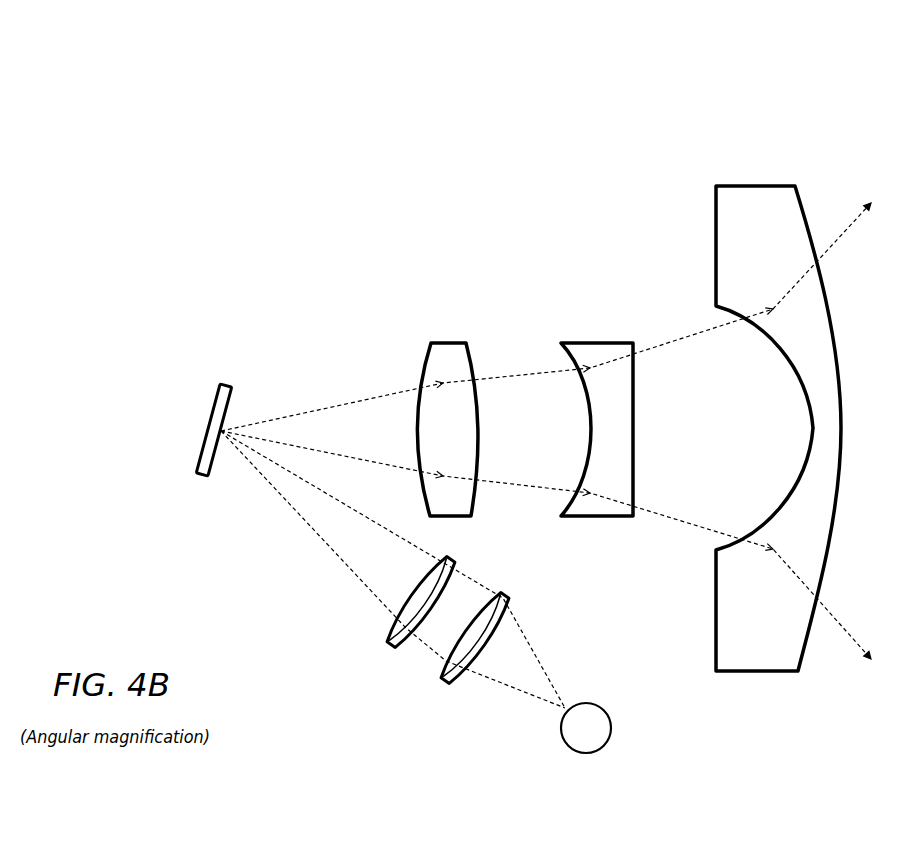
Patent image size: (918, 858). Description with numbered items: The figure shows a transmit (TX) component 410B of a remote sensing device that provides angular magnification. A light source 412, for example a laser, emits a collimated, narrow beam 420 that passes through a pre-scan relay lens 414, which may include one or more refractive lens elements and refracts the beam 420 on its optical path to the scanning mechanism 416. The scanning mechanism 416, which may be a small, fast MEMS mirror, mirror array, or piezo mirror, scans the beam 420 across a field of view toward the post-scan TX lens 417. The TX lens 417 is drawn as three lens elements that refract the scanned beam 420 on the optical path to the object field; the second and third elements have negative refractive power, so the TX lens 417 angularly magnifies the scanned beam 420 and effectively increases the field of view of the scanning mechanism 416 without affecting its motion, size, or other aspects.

The transmit (TX) component 410B is at (97, 139).
The light source 412 is at (618, 725).
The relay lens 414 is at (409, 647).
The scanning mechanism 416 is at (161, 420).
The TX lens 417 is at (834, 145).
The beam 420 is at (546, 455).